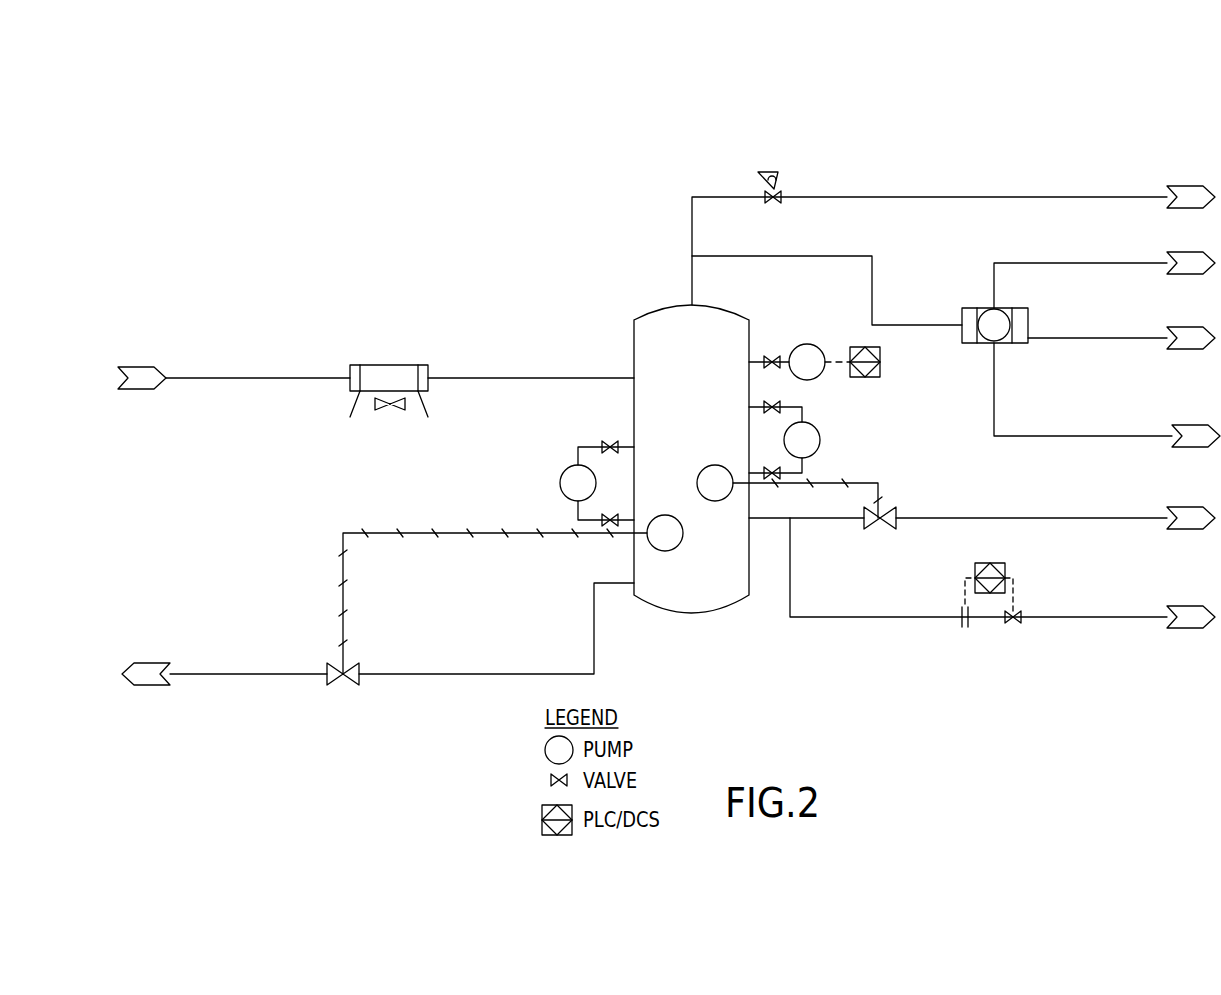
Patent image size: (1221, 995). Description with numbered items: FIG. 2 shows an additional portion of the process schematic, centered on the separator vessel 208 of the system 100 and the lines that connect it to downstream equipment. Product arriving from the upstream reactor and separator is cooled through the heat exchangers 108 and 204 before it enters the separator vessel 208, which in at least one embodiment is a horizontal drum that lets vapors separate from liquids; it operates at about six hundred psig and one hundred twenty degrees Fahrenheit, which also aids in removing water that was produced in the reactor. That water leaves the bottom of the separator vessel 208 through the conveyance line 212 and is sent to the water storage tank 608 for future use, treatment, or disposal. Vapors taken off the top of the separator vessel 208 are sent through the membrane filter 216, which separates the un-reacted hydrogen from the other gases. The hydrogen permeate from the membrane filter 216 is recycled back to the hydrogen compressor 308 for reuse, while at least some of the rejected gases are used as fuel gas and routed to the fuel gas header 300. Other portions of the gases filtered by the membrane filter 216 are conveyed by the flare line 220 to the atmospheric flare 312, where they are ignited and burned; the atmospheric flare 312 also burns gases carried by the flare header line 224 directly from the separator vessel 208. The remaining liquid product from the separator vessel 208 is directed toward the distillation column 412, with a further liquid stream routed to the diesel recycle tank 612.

The hydrotreating system 100 is at (468, 235).
The heat exchanger 108 is at (167, 327).
The heat exchanger 204 is at (383, 367).
The separator vessel 208 is at (650, 308).
The conveyance line 212 is at (557, 673).
The membrane filter 216 is at (972, 308).
The flare line 220 is at (1075, 337).
The flare header line 224 is at (927, 197).
The hydrogen compressor 308 is at (1185, 255).
The atmospheric flare 312 is at (1138, 360).
The fuel gas header 300 is at (1178, 442).
The distillation column 412 is at (1170, 520).
The diesel recycle tank 612 is at (1190, 632).
The water storage tank 608 is at (165, 688).